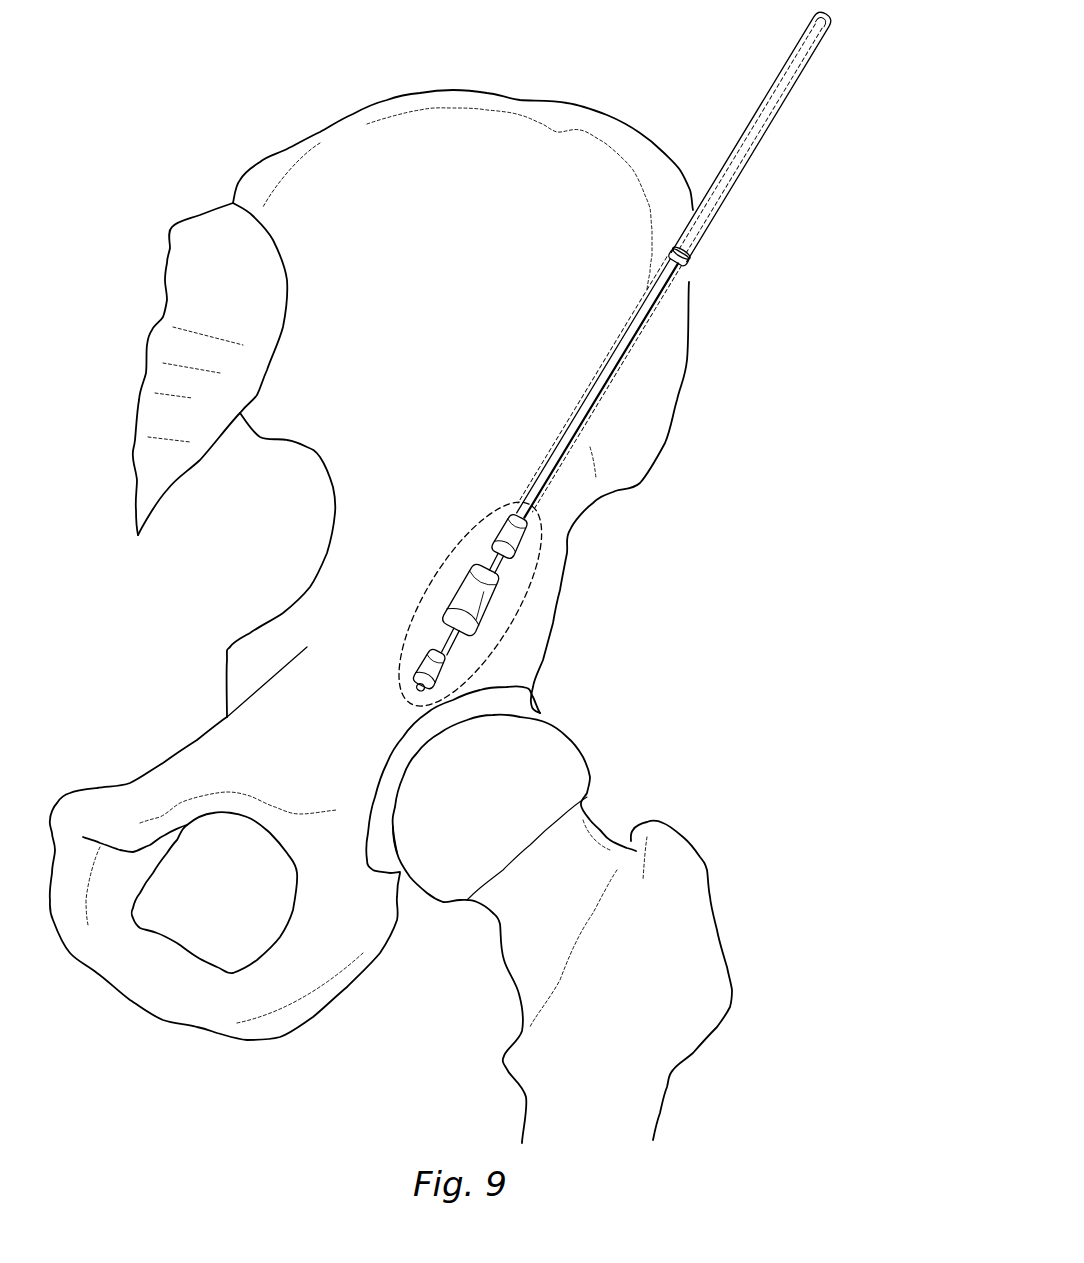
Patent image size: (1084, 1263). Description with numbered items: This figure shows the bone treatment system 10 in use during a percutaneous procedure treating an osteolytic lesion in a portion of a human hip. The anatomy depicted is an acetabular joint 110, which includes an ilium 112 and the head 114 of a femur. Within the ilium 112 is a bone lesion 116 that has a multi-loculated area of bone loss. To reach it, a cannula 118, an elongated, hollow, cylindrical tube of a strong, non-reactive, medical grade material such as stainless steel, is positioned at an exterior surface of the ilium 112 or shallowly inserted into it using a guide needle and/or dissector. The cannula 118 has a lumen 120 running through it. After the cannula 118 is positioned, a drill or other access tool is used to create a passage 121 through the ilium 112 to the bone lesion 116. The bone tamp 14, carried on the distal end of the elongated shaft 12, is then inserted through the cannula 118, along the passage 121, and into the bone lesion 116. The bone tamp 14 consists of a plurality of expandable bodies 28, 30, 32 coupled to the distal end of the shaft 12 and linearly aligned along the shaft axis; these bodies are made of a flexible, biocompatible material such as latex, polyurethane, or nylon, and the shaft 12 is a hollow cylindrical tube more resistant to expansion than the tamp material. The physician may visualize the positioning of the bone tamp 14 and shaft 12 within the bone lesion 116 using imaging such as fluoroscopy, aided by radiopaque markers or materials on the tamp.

The bone treatment system 10 is at (683, 265).
The elongated shaft 12 is at (597, 388).
The bone tamp 14 is at (466, 604).
The expandable body 28 is at (428, 671).
The expandable body 30 is at (465, 611).
The expandable body 32 is at (505, 544).
The acetabular joint 110 is at (391, 616).
The ilium 112 is at (453, 297).
The head of a femur 114 is at (501, 816).
The bone lesion 116 is at (522, 594).
The cannula 118 is at (752, 135).
The lumen 120 is at (679, 256).
The passage 121 is at (600, 384).